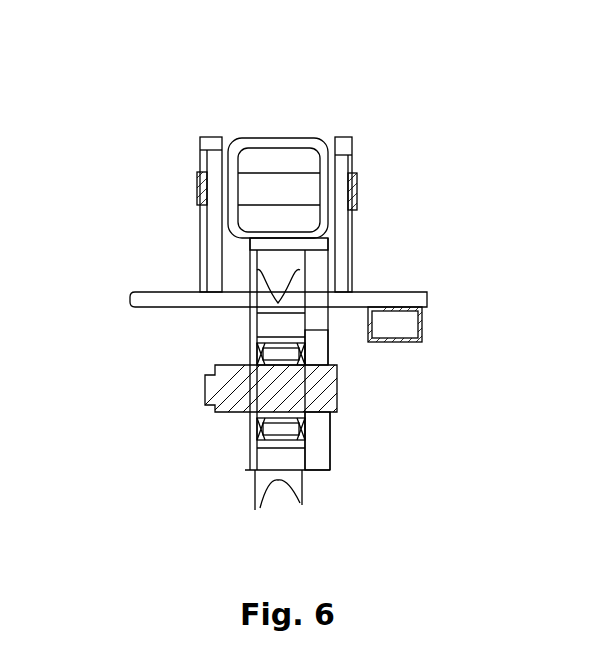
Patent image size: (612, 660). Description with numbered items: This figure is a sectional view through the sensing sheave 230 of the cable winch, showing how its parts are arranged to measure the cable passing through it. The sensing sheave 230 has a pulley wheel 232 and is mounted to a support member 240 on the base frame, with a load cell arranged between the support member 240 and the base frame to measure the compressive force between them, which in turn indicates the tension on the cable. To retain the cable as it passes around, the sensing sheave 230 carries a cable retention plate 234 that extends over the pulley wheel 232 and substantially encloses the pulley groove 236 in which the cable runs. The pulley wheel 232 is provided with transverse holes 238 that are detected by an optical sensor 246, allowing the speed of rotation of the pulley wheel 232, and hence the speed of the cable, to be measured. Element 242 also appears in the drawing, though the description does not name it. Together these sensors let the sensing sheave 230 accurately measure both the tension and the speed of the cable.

The sensing sheave 230 is at (477, 108).
The pulley wheel 232 is at (255, 488).
The cable retention plate 234 is at (245, 322).
The pulley groove 236 is at (283, 272).
The transverse holes 238 is at (283, 323).
The support member 240 is at (290, 137).
The mounting post 242 is at (200, 183).
The optical sensor 246 is at (420, 340).